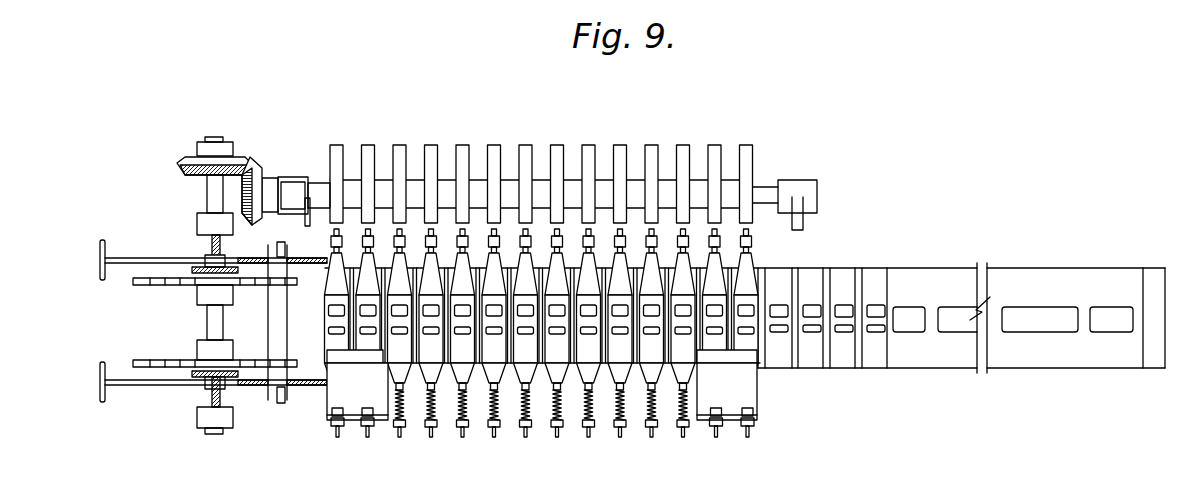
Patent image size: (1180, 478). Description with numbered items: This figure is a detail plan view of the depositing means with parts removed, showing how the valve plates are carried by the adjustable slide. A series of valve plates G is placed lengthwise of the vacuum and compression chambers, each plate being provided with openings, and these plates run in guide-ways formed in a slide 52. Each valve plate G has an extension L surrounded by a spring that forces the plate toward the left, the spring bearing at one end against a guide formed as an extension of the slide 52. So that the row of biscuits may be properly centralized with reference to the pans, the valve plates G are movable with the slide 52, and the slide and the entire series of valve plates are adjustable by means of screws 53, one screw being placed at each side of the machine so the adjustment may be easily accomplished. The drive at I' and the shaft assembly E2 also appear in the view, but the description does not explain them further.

The bevel gear drive shaft I' is at (497, 178).
The disc shaft assembly E2 is at (147, 288).
The screws 53 is at (100, 250).
The slide 52 is at (812, 384).
The valve plates G is at (427, 377).
The extension L is at (468, 408).